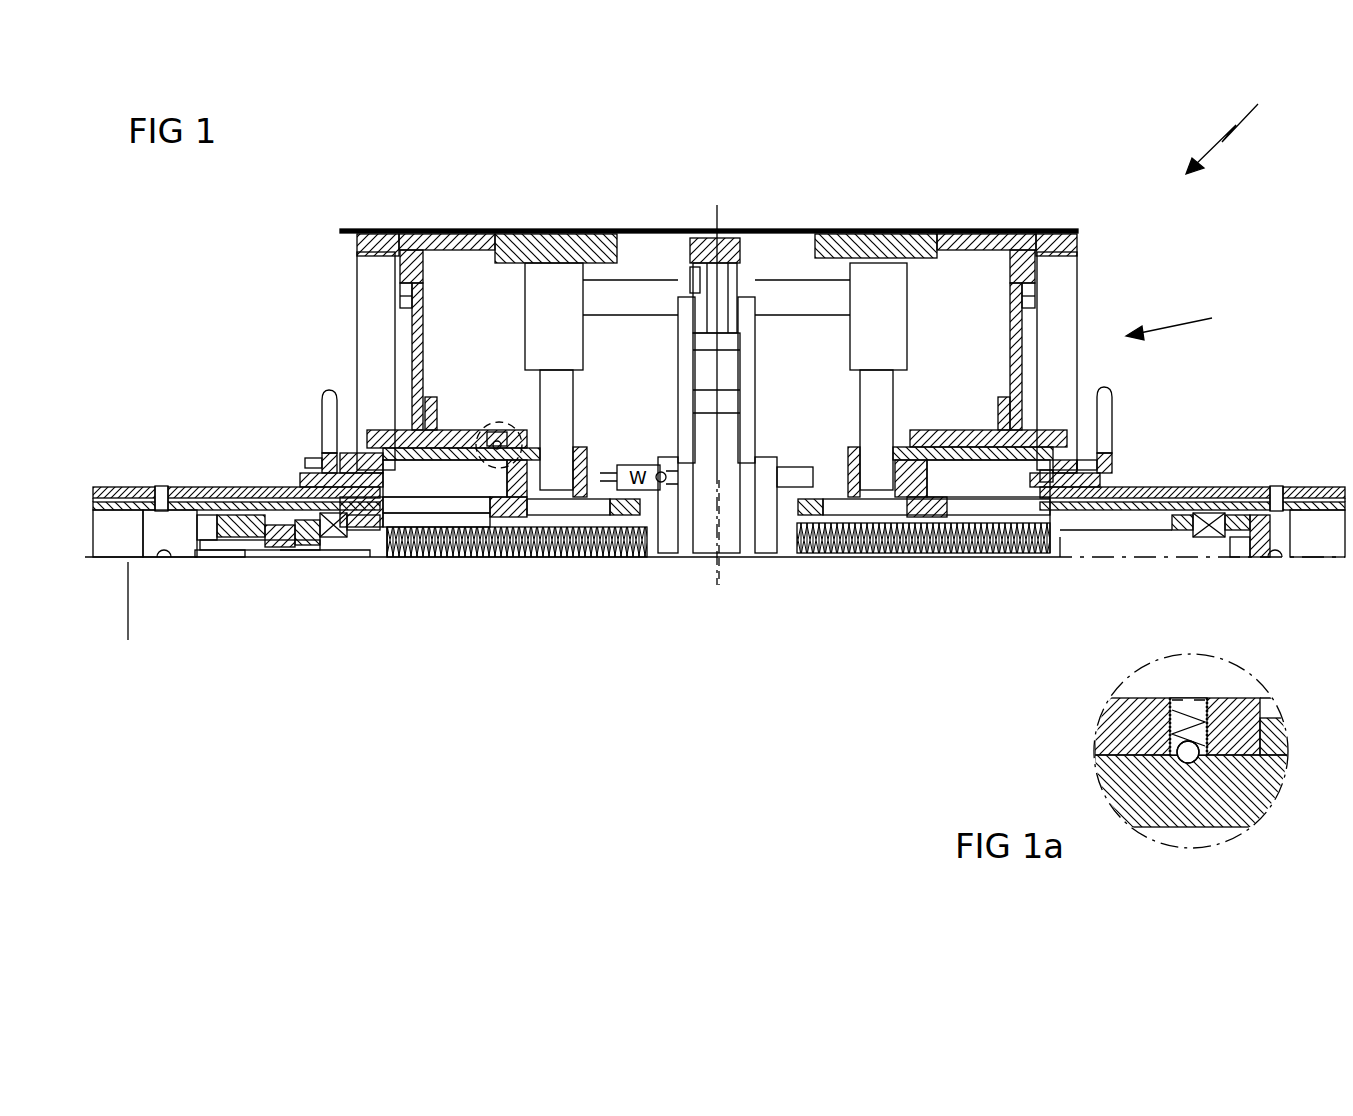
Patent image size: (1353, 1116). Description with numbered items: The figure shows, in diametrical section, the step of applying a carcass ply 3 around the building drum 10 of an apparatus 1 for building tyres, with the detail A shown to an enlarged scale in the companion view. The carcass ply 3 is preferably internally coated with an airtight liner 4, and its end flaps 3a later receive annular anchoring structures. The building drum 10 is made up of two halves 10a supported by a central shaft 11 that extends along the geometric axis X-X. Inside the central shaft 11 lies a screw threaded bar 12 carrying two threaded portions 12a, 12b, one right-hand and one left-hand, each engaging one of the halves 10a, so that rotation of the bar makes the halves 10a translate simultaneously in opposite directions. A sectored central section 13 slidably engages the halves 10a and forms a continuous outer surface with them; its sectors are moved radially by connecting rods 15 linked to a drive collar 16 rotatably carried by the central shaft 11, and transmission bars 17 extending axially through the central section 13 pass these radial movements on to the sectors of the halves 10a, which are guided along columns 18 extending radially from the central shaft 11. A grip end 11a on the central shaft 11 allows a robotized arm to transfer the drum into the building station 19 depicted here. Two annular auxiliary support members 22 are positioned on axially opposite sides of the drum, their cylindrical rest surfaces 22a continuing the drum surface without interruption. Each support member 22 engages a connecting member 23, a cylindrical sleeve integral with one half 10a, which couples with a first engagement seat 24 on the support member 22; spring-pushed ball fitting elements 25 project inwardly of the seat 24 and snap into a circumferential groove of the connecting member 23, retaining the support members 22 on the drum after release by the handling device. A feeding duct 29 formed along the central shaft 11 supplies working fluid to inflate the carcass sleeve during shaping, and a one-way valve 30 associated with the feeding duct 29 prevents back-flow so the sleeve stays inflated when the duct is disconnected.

The apparatus for building tyres 1 is at (1233, 130).
The carcass ply 3 is at (857, 231).
The end flaps 3a is at (455, 232).
The liner 4 is at (787, 230).
The building drum 10 is at (667, 568).
The halves 10a is at (518, 250).
The central shaft 11 is at (222, 487).
The grip end 11a is at (140, 487).
The screw threaded bar 12 is at (415, 568).
The threaded portion 12a is at (465, 557).
The threaded portion 12b is at (950, 557).
The central section 13 is at (705, 236).
The connecting rods 15 is at (752, 388).
The drive collar 16 is at (740, 455).
The transmission bars 17 is at (650, 288).
The columns 18 is at (562, 412).
The building station 19 is at (1186, 319).
The auxiliary support members 22 is at (357, 240).
The rest surfaces 22a is at (410, 234).
The connecting members 23 is at (433, 460).
The first engagement seat 24 is at (458, 430).
The fitting elements 25 is at (499, 445).
The feeding duct 29 is at (745, 480).
The one-way valve 30 is at (617, 557).
The detail A is at (518, 557).
The geometric axis X-X is at (135, 616).